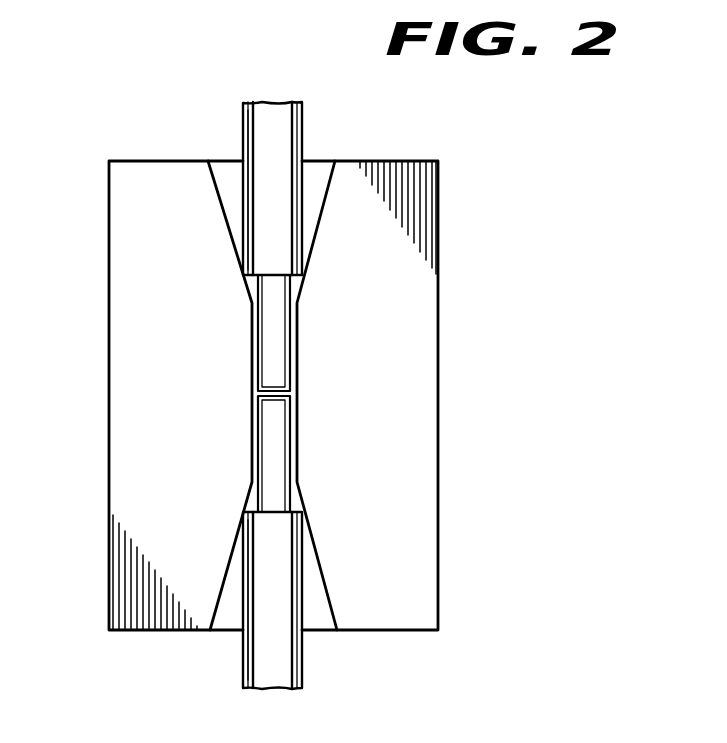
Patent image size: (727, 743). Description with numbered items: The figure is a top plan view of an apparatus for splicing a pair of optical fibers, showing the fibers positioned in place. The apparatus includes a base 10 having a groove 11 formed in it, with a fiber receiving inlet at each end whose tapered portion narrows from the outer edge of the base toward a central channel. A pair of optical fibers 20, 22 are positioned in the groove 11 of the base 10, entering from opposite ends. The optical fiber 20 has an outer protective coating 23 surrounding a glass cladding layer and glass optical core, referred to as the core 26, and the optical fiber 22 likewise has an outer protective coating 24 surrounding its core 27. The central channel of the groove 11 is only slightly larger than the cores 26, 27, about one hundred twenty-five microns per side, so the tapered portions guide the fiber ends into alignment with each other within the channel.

The base 10 is at (118, 270).
The groove 11 is at (292, 284).
The optical fiber 20 is at (291, 133).
The optical fiber 22 is at (291, 654).
The outer protective coating 23 is at (256, 133).
The outer protective coating 24 is at (257, 654).
The core 26 is at (267, 349).
The core 27 is at (267, 439).